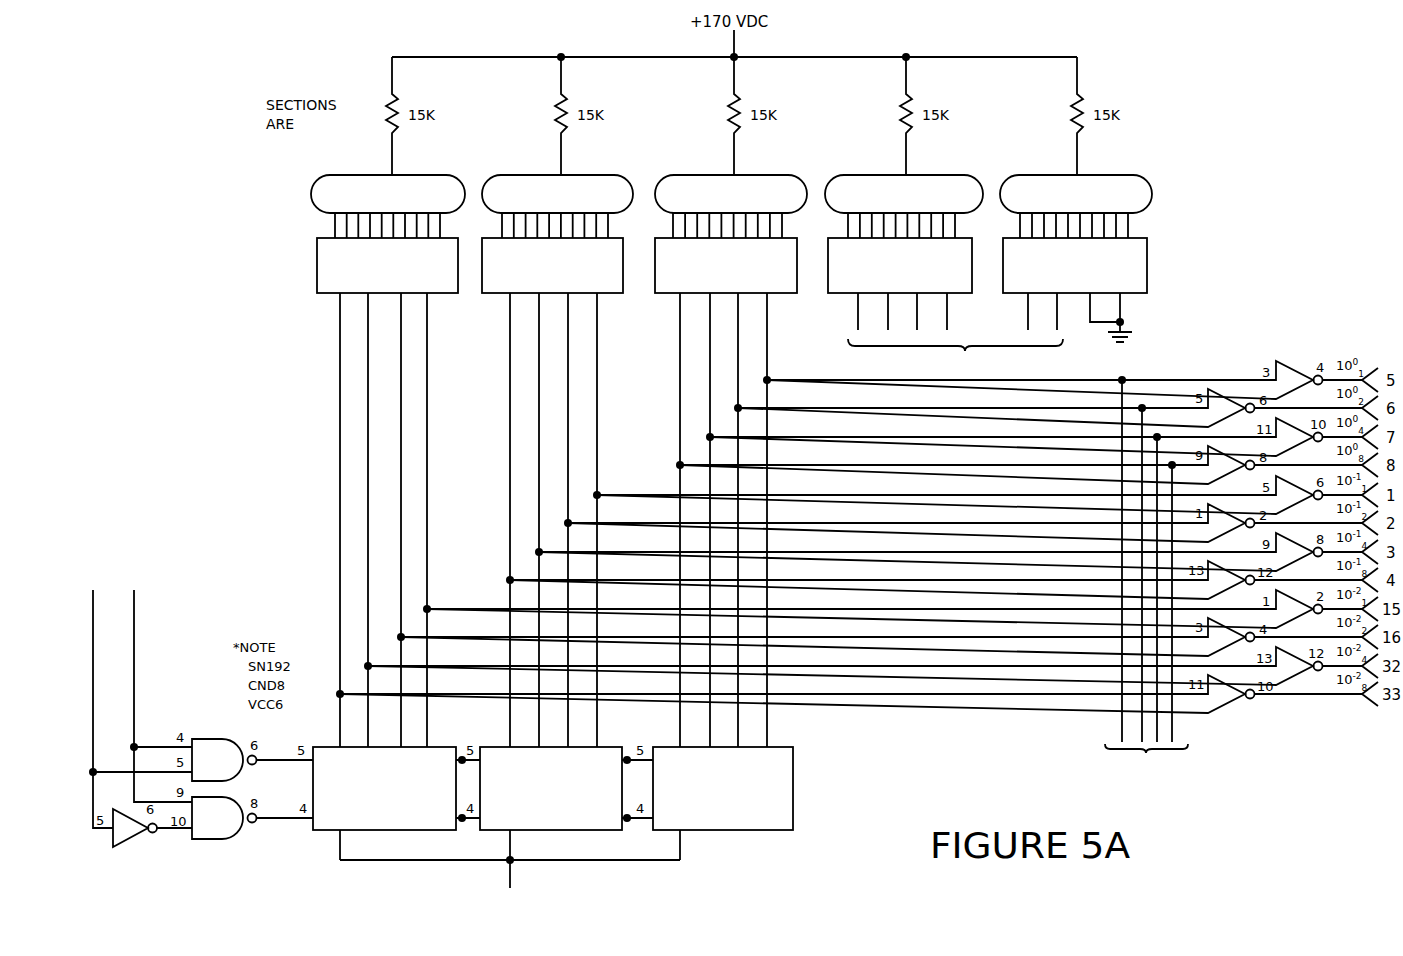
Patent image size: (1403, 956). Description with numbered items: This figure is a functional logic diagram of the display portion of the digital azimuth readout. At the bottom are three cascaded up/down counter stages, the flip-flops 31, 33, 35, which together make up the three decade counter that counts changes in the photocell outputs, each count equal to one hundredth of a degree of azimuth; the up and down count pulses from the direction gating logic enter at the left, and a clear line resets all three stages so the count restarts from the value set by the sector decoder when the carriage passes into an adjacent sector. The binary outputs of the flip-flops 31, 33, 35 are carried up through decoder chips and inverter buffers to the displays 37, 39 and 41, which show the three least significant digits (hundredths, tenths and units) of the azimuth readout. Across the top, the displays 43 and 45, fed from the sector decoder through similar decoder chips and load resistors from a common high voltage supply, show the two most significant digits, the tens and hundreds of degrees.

The display 37 is at (425, 173).
The display 39 is at (600, 173).
The display 41 is at (776, 173).
The display 43 is at (951, 173).
The display 45 is at (1122, 173).
The flip-flop 31 is at (322, 837).
The flip-flop 33 is at (496, 837).
The flip-flop 35 is at (668, 837).